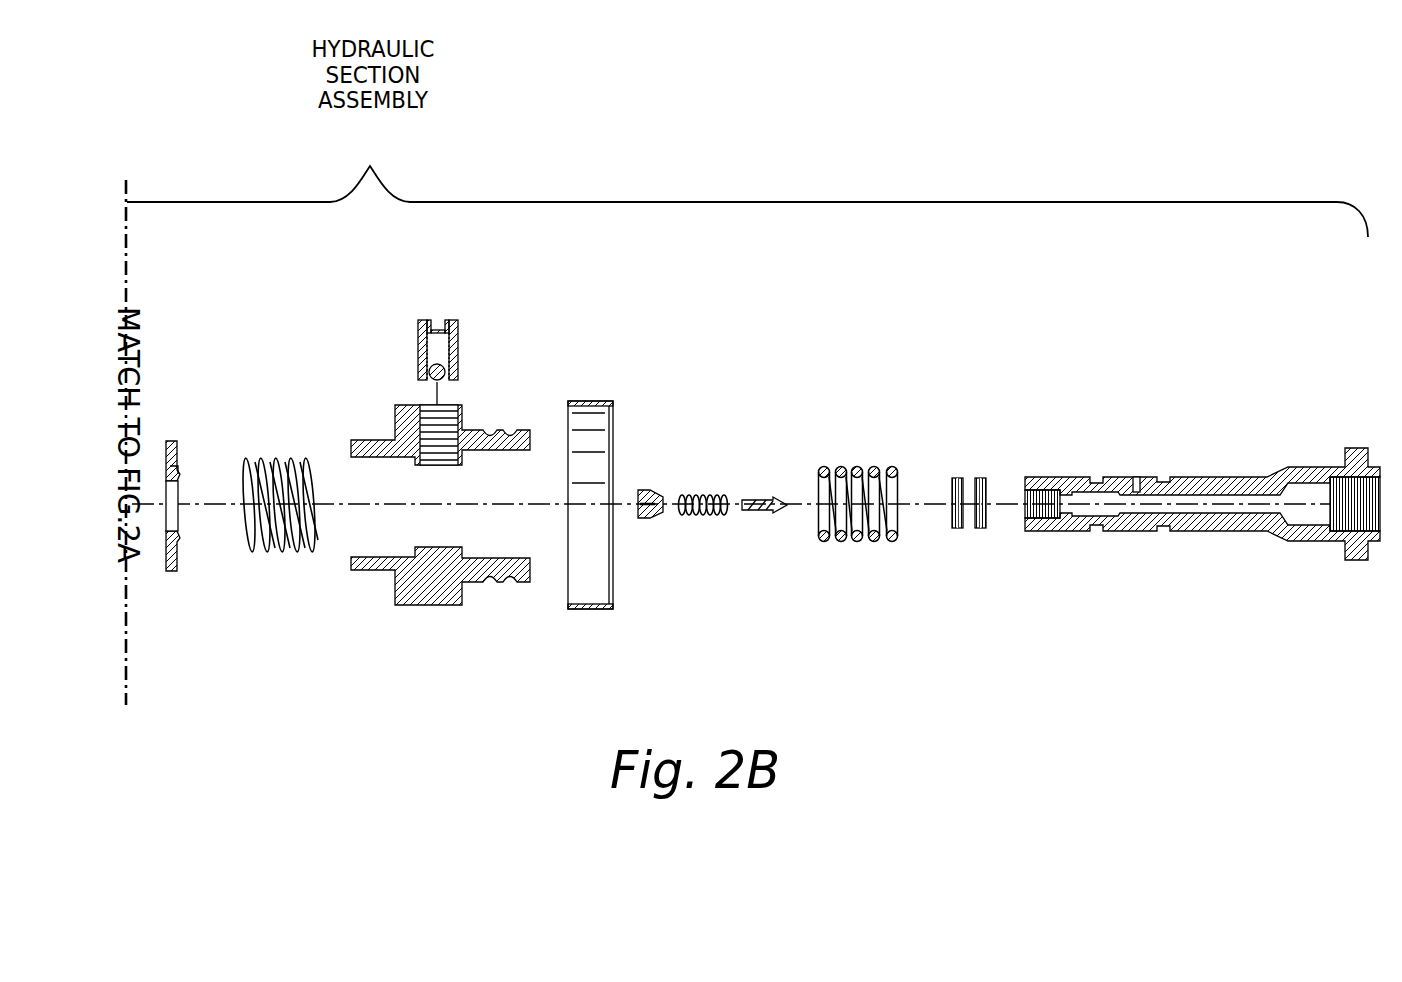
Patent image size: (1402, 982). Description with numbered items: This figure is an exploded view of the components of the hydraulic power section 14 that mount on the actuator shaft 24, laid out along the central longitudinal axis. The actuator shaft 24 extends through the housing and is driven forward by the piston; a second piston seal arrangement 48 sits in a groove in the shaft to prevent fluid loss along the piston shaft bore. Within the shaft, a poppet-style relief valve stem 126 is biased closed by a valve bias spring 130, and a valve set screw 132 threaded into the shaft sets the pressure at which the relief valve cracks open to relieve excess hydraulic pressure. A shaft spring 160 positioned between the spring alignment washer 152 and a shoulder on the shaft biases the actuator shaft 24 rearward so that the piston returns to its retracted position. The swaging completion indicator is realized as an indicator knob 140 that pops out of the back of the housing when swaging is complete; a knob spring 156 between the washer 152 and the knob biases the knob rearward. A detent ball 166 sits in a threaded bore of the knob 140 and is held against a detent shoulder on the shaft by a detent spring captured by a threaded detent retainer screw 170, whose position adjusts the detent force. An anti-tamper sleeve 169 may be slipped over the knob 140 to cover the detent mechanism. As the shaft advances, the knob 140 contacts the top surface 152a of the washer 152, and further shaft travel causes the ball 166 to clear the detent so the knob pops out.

The hydraulic power section 14 is at (747, 186).
The spring alignment washer 152 is at (186, 567).
The top surface of the washer 152a is at (178, 466).
The knob spring 156 is at (293, 553).
The indicator knob 140 is at (432, 610).
The threaded detent retainer screw 170 is at (453, 320).
The detent ball 166 is at (431, 376).
The anti-tamper sleeve 169 is at (614, 418).
The valve set screw 132 is at (652, 491).
The valve bias spring 130 is at (720, 514).
The relief valve stem 126 is at (763, 498).
The shaft spring 160 is at (873, 539).
The second piston seal arrangement 48 is at (983, 468).
The actuator shaft 24 is at (1145, 472).